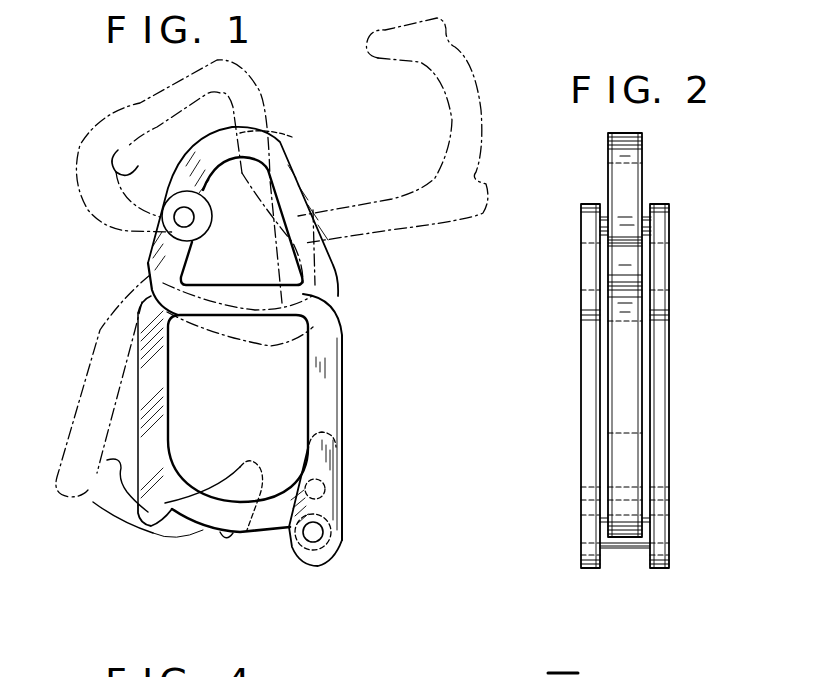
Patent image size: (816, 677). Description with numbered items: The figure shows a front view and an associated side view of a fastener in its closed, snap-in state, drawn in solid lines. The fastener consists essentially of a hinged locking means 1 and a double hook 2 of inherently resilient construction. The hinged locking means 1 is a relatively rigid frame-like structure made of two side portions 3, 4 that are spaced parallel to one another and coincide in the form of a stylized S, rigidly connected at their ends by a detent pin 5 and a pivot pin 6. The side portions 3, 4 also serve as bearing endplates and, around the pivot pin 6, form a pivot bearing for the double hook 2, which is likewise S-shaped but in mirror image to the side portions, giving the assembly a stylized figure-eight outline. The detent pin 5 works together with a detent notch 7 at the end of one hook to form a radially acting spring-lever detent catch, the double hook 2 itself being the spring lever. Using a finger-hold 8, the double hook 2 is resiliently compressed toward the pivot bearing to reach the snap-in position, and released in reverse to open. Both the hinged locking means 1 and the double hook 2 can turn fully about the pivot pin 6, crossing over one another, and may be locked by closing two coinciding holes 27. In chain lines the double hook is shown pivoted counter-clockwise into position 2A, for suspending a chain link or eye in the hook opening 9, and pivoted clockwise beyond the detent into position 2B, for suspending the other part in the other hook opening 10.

In FIG. 1, the hinged locking means 1 is at (344, 320).
In FIG. 2, the hinged locking means 1 is at (671, 287).
In FIG. 1, the double hook 2 is at (334, 280).
In FIG. 2, the double hook 2 is at (606, 173).
In FIG. 1, the position of double hook 2A is at (461, 47).
In FIG. 1, the position of double hook 2B is at (70, 402).
In FIG. 1, the side portion 3 is at (325, 402).
In FIG. 2, the side portion 3 is at (658, 362).
In FIG. 2, the side portion 4 is at (585, 343).
In FIG. 1, the detent pin 5 is at (324, 532).
In FIG. 2, the detent pin 5 is at (613, 548).
In FIG. 1, the pivot pin 6 is at (181, 219).
In FIG. 2, the pivot pin 6 is at (647, 227).
In FIG. 1, the detent notch 7 is at (222, 540).
In FIG. 1, the finger-hold 8 is at (153, 527).
In FIG. 1, the hook opening 9 is at (132, 150).
In FIG. 1, the hook opening 10 is at (96, 498).
In FIG. 1, the holes 27 is at (326, 489).